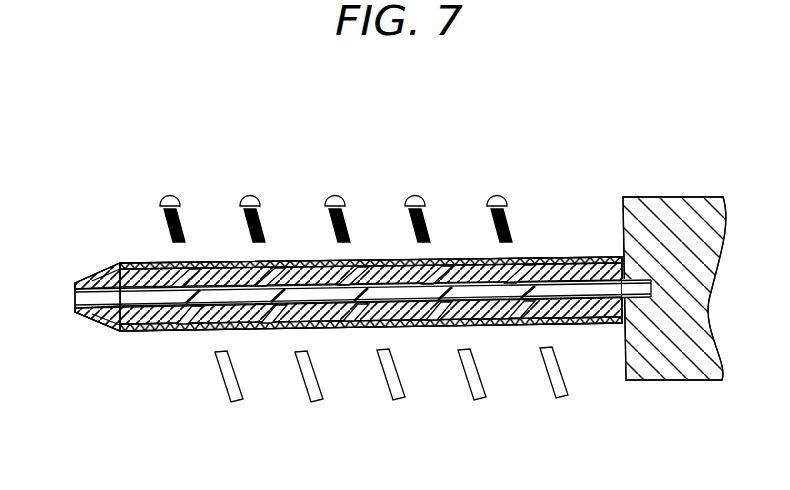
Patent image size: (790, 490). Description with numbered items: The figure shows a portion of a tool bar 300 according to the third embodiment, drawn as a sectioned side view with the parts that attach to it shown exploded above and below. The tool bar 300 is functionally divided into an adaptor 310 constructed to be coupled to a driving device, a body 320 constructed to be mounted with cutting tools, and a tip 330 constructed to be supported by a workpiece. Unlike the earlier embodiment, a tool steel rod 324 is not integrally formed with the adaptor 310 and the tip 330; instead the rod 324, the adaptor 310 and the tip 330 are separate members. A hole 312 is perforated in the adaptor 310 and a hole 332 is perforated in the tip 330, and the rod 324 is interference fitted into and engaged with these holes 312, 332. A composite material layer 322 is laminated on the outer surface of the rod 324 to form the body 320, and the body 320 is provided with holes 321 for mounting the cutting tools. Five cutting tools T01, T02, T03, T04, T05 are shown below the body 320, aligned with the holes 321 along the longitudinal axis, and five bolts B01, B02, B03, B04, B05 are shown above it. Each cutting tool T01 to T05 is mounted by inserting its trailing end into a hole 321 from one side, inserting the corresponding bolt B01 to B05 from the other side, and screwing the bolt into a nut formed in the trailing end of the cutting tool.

The tool bar 300 is at (362, 266).
The adaptor 310 is at (677, 197).
The hole 312 is at (640, 298).
The body 320 is at (577, 257).
The holes 321 is at (283, 262).
The composite material layer 322 is at (380, 261).
The tool steel rod 324 is at (604, 323).
The tip 330 is at (106, 270).
The hole 332 is at (111, 328).
The bolt B01 is at (169, 200).
The bolt B02 is at (250, 200).
The bolt B03 is at (335, 200).
The bolt B04 is at (416, 200).
The bolt B05 is at (497, 200).
The cutting tool T01 is at (237, 397).
The cutting tool T02 is at (315, 397).
The cutting tool T03 is at (395, 394).
The cutting tool T04 is at (476, 395).
The cutting tool T05 is at (560, 394).